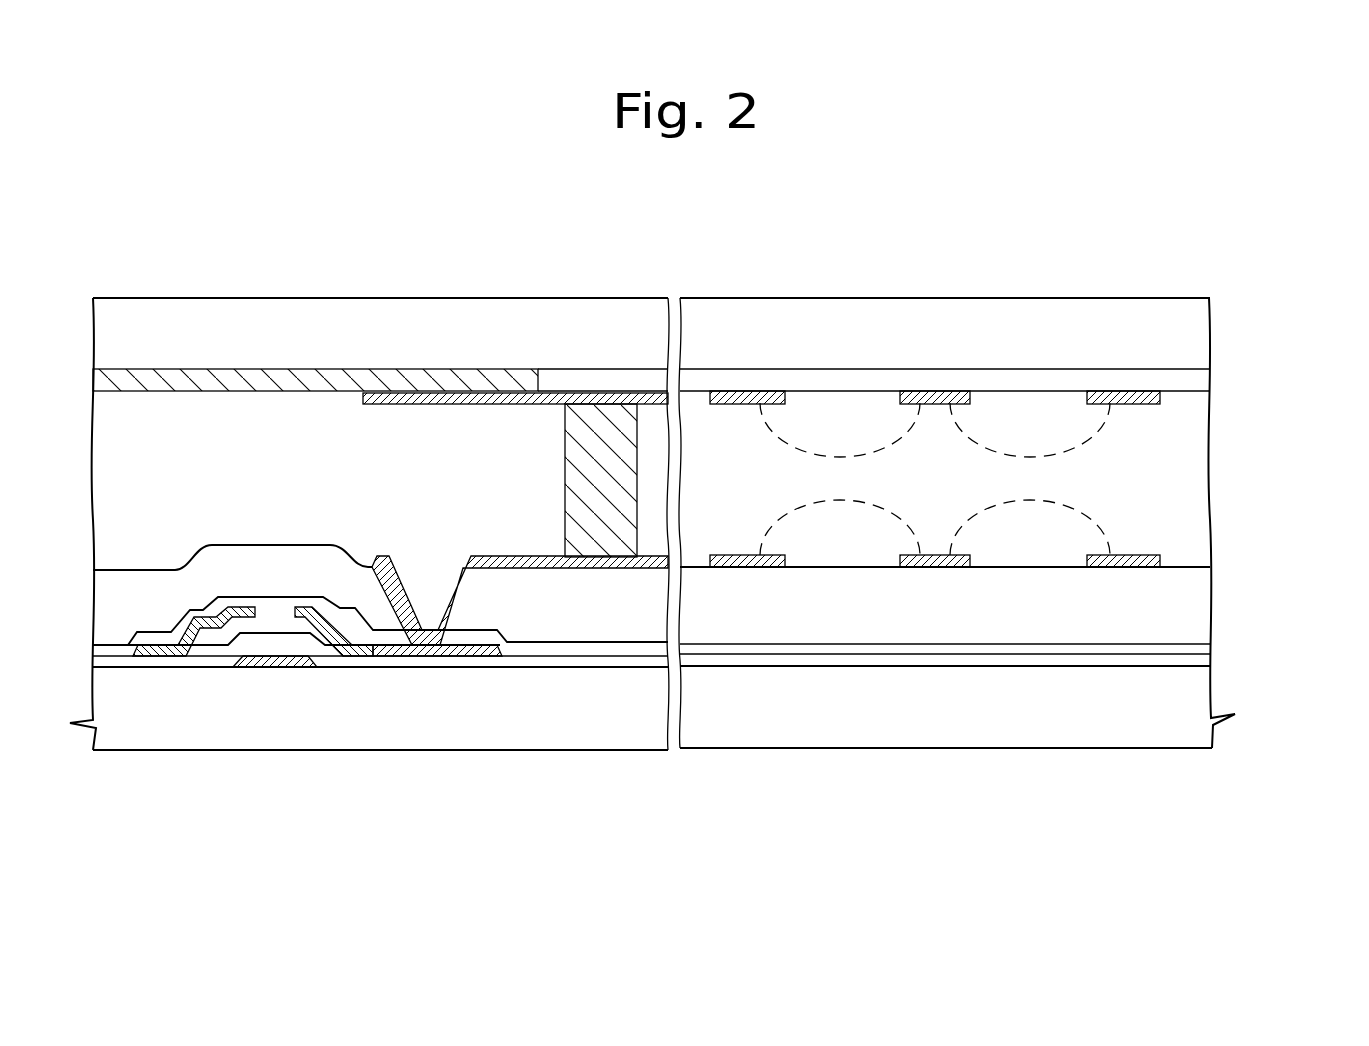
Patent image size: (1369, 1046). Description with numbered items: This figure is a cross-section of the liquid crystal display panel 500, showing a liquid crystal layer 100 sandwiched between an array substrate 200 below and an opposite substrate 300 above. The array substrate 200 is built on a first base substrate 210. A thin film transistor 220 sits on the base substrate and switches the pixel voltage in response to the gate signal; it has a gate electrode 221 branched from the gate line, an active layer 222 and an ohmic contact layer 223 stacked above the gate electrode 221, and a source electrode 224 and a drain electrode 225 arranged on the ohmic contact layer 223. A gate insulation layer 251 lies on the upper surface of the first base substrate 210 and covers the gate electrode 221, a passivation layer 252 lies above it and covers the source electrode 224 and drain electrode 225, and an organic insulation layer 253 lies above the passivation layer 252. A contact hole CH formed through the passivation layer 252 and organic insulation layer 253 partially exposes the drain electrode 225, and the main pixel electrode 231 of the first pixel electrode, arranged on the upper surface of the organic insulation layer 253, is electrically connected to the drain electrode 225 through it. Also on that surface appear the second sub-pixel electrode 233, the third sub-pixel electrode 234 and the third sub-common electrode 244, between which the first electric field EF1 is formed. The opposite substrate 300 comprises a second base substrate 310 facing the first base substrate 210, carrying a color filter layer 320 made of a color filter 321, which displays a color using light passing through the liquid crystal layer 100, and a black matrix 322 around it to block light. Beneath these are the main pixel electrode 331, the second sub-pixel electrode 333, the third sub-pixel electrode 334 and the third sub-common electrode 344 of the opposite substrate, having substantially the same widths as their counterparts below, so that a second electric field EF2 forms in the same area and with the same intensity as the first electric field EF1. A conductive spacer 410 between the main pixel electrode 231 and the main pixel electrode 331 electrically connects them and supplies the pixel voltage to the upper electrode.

The liquid crystal display panel 500 is at (1158, 191).
The liquid crystal layer 100 is at (1195, 480).
The opposite substrate 300 is at (729, 301).
The second base substrate 310 is at (1195, 328).
The color filter layer 320 is at (697, 300).
The color filter 321 is at (577, 380).
The black matrix 322 is at (493, 378).
The main pixel electrode of the second pixel electrode 331 is at (420, 392).
The second sub-pixel electrode of the second pixel electrode 333 is at (740, 390).
The third sub-common electrode of the second common electrode 344 is at (931, 390).
The third sub-pixel electrode of the second pixel electrode 334 is at (1117, 390).
The conductive spacer 410 is at (575, 472).
The first electric field EF1 is at (783, 518).
The second electric field EF2 is at (900, 440).
The array substrate 200 is at (729, 679).
The first base substrate 210 is at (1195, 690).
The gate insulation layer 251 is at (1195, 657).
The passivation layer 252 is at (1195, 647).
The organic insulation layer 253 is at (1195, 603).
The thin film transistor 220 is at (317, 729).
The gate electrode 221 is at (277, 668).
The active layer 222 is at (208, 646).
The ohmic contact layer 223 is at (330, 638).
The source electrode 224 is at (158, 656).
The drain electrode 225 is at (431, 725).
The main pixel electrode 231 is at (540, 568).
The contact hole CH is at (425, 583).
The second sub-pixel electrode 233 is at (745, 567).
The third sub-common electrode 244 is at (935, 567).
The third sub-pixel electrode 234 is at (1122, 567).